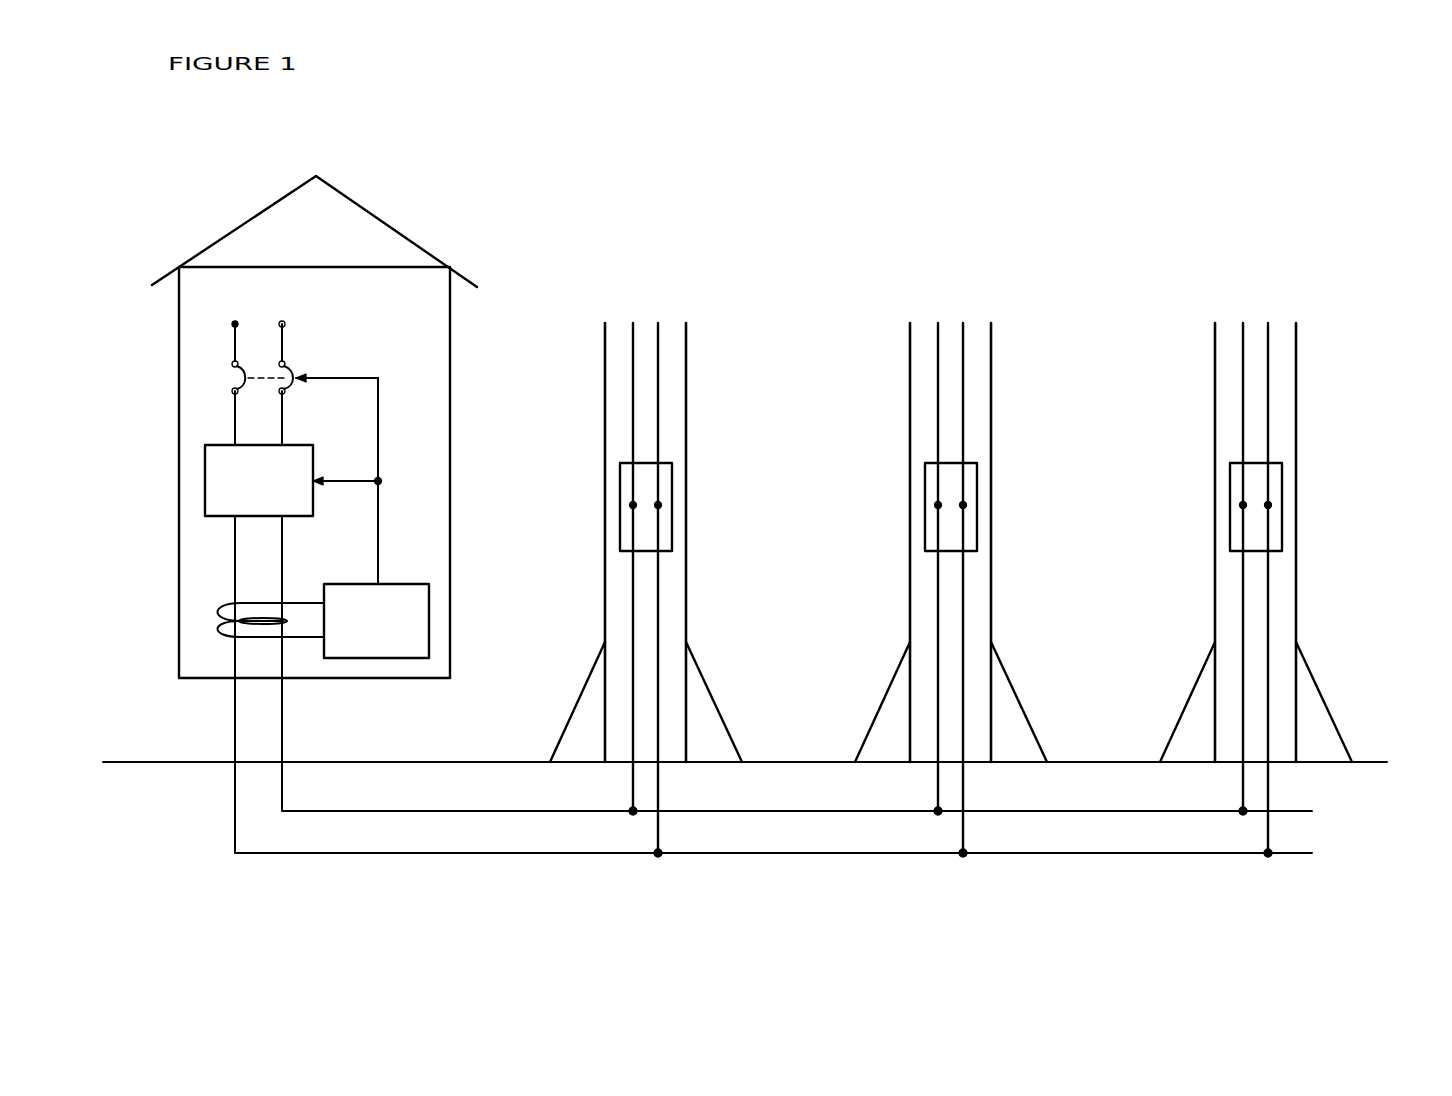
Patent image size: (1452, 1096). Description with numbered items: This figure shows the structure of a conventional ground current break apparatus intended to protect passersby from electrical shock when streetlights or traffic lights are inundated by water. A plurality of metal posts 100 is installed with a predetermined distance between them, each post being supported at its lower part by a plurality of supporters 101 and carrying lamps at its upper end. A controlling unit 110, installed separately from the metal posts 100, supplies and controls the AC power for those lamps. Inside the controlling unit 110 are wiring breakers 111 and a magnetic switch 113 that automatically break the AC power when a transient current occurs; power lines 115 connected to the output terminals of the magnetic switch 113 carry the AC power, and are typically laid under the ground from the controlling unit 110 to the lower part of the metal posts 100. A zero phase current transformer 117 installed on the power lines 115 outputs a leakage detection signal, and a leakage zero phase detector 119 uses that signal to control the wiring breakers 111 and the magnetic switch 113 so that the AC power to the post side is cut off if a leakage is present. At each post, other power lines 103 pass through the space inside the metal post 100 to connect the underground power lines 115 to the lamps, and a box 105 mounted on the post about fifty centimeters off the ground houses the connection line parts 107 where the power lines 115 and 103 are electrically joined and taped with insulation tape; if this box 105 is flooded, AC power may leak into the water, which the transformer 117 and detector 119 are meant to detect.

The metal post 100 is at (686, 356).
The pole support brace 101 is at (712, 697).
The other power lines 103 is at (635, 387).
The box 105 is at (672, 475).
The connection terminal 107 is at (658, 505).
The controlling unit 110 is at (417, 228).
The wiring breakers 111 is at (247, 378).
The magnetic switch 113 is at (208, 492).
The power lines 115 is at (308, 811).
The zero phase current transformer 117 is at (217, 637).
The leakage zero phase detector 119 is at (425, 590).